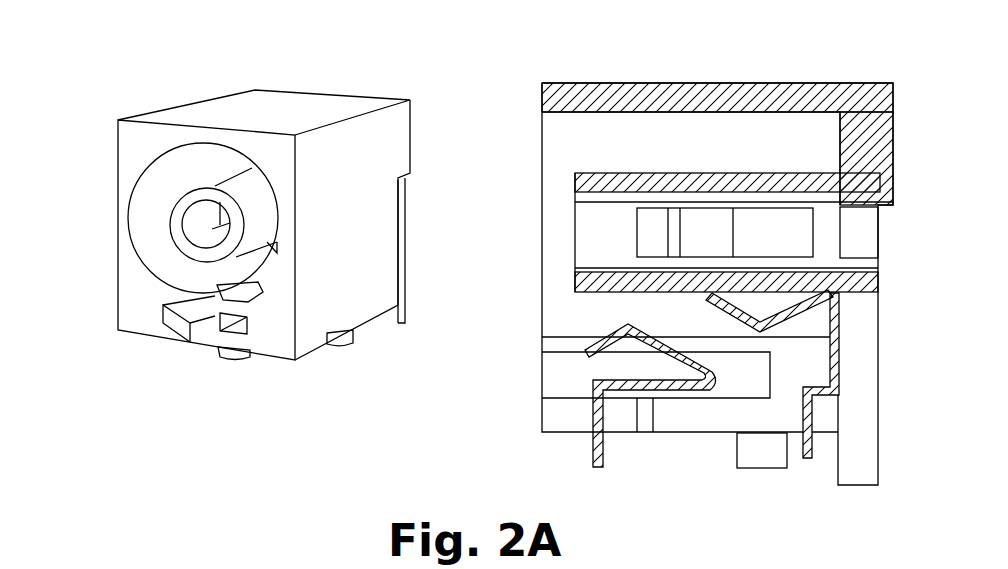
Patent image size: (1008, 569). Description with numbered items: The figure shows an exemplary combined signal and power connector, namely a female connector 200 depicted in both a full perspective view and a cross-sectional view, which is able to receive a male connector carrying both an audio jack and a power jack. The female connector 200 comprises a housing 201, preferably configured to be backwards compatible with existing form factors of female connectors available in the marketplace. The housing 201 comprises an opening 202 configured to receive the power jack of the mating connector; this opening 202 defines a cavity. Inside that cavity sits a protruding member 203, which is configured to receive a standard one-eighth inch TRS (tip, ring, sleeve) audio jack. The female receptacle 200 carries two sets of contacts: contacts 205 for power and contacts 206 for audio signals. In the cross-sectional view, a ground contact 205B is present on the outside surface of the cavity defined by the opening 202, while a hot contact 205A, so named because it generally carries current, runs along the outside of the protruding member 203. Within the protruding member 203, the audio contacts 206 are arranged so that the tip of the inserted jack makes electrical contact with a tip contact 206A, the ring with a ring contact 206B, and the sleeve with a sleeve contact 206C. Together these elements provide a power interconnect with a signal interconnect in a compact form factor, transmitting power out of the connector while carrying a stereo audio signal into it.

The female connector 200 is at (297, 68).
The housing 201 is at (218, 104).
The opening 202 is at (180, 284).
The protruding member 203 is at (185, 193).
The contacts for power 205 is at (237, 352).
The hot contact 205A is at (802, 470).
The ground contact 205B is at (600, 460).
The contacts for audio signals 206 is at (400, 322).
The tip contact 206A is at (623, 203).
The ring contact 206B is at (677, 250).
The sleeve contact 206C is at (668, 268).